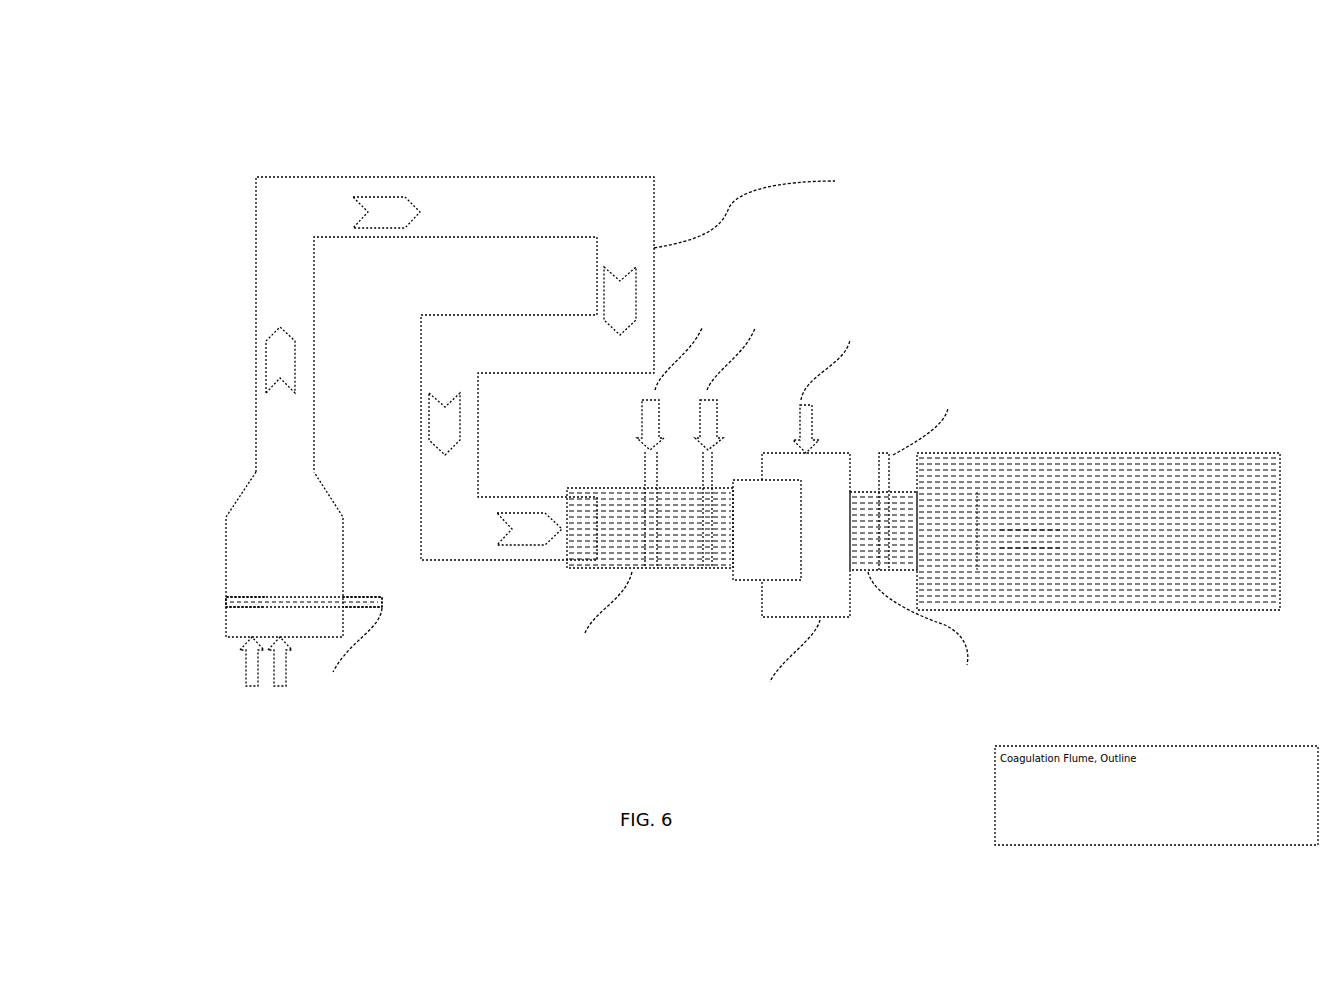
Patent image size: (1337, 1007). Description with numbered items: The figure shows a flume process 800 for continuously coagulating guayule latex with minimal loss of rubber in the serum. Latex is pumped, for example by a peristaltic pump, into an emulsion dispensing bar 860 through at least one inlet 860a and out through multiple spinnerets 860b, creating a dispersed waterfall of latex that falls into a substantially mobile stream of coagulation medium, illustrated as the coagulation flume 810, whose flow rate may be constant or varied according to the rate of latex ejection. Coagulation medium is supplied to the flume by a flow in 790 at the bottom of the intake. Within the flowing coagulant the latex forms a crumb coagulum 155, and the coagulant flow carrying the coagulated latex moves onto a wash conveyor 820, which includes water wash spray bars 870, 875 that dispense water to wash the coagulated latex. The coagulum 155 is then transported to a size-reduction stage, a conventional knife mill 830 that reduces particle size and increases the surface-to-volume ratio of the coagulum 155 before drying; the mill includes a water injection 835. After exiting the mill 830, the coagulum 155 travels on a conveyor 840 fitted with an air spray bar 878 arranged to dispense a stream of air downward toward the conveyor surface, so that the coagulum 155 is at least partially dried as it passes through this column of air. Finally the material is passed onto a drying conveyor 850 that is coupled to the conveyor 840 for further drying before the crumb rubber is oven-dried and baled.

The flume process 800 is at (915, 118).
The coagulation flume 810 is at (248, 548).
The coagulation medium flow in 790 is at (230, 710).
The emulsion dispensing bar 860 is at (360, 705).
The inlet 860a is at (382, 601).
The spinnerets 860b is at (262, 598).
The wash conveyor 820 is at (588, 665).
The water wash spray bar 870 is at (632, 450).
The water wash spray bar 875 is at (720, 448).
The knife mill 830 is at (757, 598).
The water injection 835 is at (796, 398).
The air spray bar 878 is at (880, 452).
The conveyor 840 is at (937, 690).
The drying conveyor 850 is at (1043, 452).
The coagulum 155 is at (1028, 547).